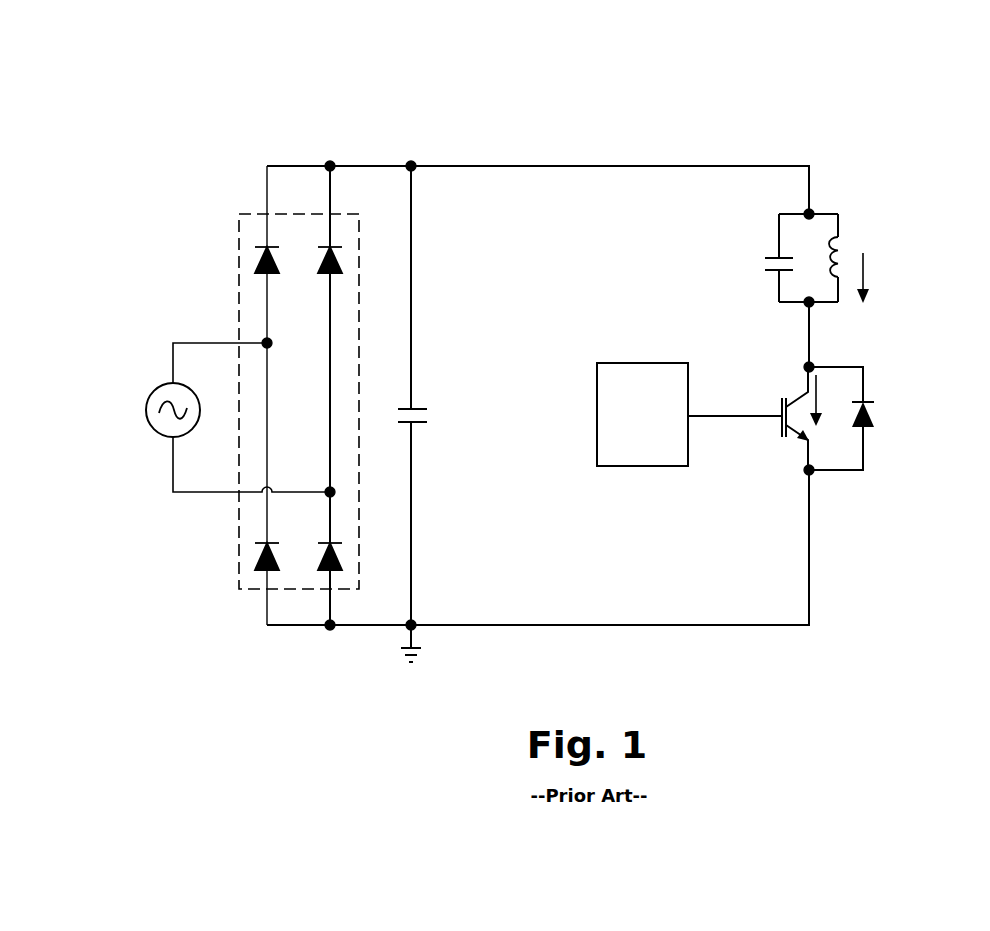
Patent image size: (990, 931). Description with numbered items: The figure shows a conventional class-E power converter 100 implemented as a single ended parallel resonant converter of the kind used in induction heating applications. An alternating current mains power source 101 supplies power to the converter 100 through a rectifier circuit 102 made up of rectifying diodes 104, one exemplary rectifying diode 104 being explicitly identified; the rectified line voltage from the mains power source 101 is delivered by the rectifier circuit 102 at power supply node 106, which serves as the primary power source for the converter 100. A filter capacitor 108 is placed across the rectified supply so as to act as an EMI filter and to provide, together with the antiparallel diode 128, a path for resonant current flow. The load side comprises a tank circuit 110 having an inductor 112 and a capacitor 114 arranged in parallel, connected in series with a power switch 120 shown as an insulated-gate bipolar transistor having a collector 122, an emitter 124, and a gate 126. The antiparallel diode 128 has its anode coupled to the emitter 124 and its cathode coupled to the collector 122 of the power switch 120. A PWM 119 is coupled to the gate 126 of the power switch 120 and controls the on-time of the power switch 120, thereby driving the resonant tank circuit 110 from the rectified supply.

The power converter 100 is at (943, 94).
The AC mains power source 101 is at (146, 401).
The rectifier circuit 102 is at (240, 294).
The rectifying diode 104 is at (273, 274).
The power supply node 106 is at (334, 162).
The filter capacitor 108 is at (407, 402).
The tank circuit 110 is at (829, 212).
The inductor 112 is at (846, 244).
The capacitor 114 is at (777, 258).
The PWM 119 is at (632, 362).
The power switch 120 is at (750, 388).
The collector 122 is at (808, 392).
The emitter 124 is at (808, 452).
The gate 126 is at (781, 426).
The antiparallel diode 128 is at (876, 412).